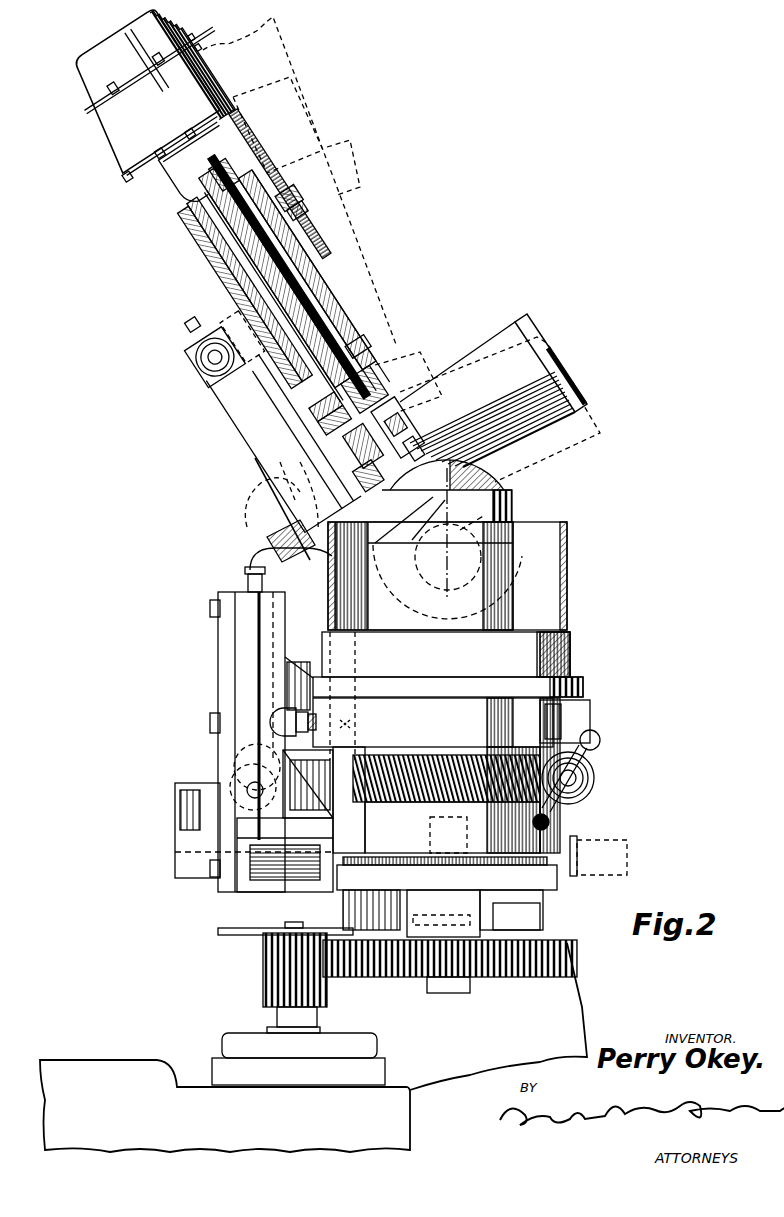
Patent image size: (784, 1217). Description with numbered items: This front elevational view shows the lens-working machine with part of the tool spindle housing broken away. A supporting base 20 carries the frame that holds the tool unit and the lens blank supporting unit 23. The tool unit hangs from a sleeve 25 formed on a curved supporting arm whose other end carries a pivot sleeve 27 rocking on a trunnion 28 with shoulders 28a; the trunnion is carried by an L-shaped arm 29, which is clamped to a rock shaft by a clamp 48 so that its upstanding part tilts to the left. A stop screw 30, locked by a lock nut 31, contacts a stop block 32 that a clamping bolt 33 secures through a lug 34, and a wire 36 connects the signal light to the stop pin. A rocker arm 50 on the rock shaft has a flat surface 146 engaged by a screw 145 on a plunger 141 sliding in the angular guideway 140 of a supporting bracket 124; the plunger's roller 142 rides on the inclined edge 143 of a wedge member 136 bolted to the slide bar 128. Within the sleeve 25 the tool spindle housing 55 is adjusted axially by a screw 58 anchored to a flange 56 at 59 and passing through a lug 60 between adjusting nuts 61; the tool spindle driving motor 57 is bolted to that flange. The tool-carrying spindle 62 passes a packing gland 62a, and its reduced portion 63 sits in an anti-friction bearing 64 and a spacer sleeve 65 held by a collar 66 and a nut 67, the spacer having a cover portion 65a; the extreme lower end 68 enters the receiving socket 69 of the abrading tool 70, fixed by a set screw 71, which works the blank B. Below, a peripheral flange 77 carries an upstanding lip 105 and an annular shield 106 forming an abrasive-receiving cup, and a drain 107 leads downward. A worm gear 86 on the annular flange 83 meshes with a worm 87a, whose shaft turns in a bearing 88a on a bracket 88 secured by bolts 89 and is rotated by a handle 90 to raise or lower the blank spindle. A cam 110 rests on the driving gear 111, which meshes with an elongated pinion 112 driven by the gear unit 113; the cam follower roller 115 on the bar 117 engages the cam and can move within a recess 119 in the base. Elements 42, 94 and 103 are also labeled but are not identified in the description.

The supporting base 20 is at (572, 1012).
The lens blank supporting unit 23 is at (595, 688).
The sleeve 25 is at (197, 233).
The pivot sleeve 27 is at (462, 362).
The trunnion 28 is at (290, 505).
The shoulders 28a is at (530, 318).
The L-shaped arm 29 is at (246, 424).
The stop screw 30 is at (204, 378).
The lock nut 31 is at (208, 358).
The stop block 32 is at (202, 345).
The clamping bolt 33 is at (325, 292).
The lug 34 is at (228, 316).
The wire 36 is at (192, 326).
The ball 42 is at (428, 568).
The clamp 48 is at (447, 572).
The rocker arm 50 is at (300, 560).
The tool spindle housing 55 is at (202, 164).
The flange 56 is at (126, 178).
The tool spindle driving motor 57 is at (157, 89).
The screw 58 is at (238, 138).
The anchor point 59 is at (238, 108).
The lug 60 is at (280, 185).
The adjusting nuts 61 is at (290, 192).
The tool-carrying spindle 62 is at (224, 262).
The packing gland 62a is at (193, 205).
The reduced portion 63 is at (366, 370).
The anti-friction bearing 64 is at (362, 350).
The spacer sleeve 65 is at (322, 412).
The cover portion 65a is at (392, 392).
The collar 66 is at (336, 430).
The nut 67 is at (360, 440).
The extreme lower end 68 is at (412, 420).
The receiving socket 69 is at (425, 428).
The abrading tool 70 is at (450, 430).
The set screw 71 is at (362, 470).
The peripheral flange 77 is at (572, 656).
The annular flange 83 is at (368, 828).
The worm gear 86 is at (430, 790).
The worm 87a is at (586, 795).
The bracket 88 is at (584, 712).
The bearing 88a is at (590, 778).
The bolts 89 is at (600, 736).
The handle 90 is at (552, 825).
The bearing 94 is at (514, 510).
The column 103 is at (516, 598).
The upstanding lip 105 is at (560, 632).
The annular shield 106 is at (568, 545).
The drain 107 is at (352, 724).
The cam 110 is at (390, 880).
The driving gear 111 is at (537, 978).
The elongated pinion 112 is at (305, 993).
The gear unit 113 is at (225, 1092).
The cam follower roller 115 is at (500, 895).
The bar 117 is at (432, 838).
The recess 119 is at (500, 893).
The supporting bracket 124 is at (290, 882).
The slide bar 128 is at (578, 857).
The wedge member 136 is at (178, 800).
The angular guideway 140 is at (276, 607).
The plunger 141 is at (264, 628).
The roller 142 is at (232, 770).
The inclined edge 143 is at (262, 835).
The screw 145 is at (246, 578).
The flat surface 146 is at (250, 560).
The blank B is at (504, 488).